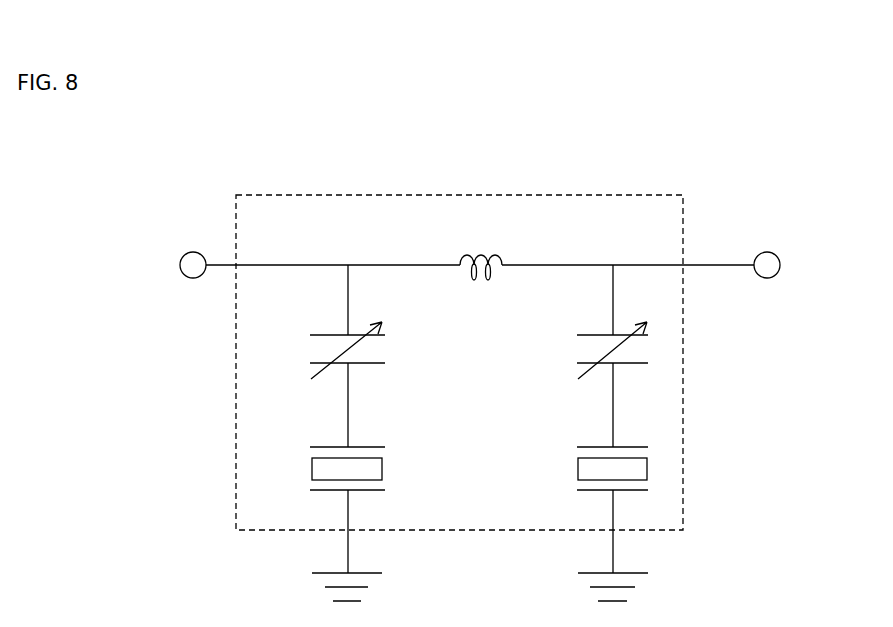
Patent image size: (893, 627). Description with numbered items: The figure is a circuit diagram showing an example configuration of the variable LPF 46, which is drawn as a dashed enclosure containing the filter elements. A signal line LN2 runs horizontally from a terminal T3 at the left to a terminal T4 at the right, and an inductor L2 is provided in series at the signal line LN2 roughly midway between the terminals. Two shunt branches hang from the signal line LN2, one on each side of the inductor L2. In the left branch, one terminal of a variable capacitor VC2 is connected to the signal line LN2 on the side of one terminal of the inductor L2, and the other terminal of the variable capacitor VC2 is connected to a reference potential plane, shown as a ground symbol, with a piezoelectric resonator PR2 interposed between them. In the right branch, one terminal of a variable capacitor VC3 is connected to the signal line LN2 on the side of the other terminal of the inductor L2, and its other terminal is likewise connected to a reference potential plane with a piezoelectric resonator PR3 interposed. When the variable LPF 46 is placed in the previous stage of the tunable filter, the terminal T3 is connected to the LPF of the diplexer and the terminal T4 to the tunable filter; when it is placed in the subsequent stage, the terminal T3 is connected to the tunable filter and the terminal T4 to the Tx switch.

The terminal T3 is at (190, 252).
The terminal T4 is at (770, 252).
The inductor L2 is at (481, 254).
The signal line LN2 is at (565, 265).
The variable capacitor VC2 is at (325, 356).
The variable capacitor VC3 is at (589, 356).
The piezoelectric resonator PR2 is at (325, 510).
The piezoelectric resonator PR3 is at (589, 510).
The variable LPF 46 is at (684, 445).